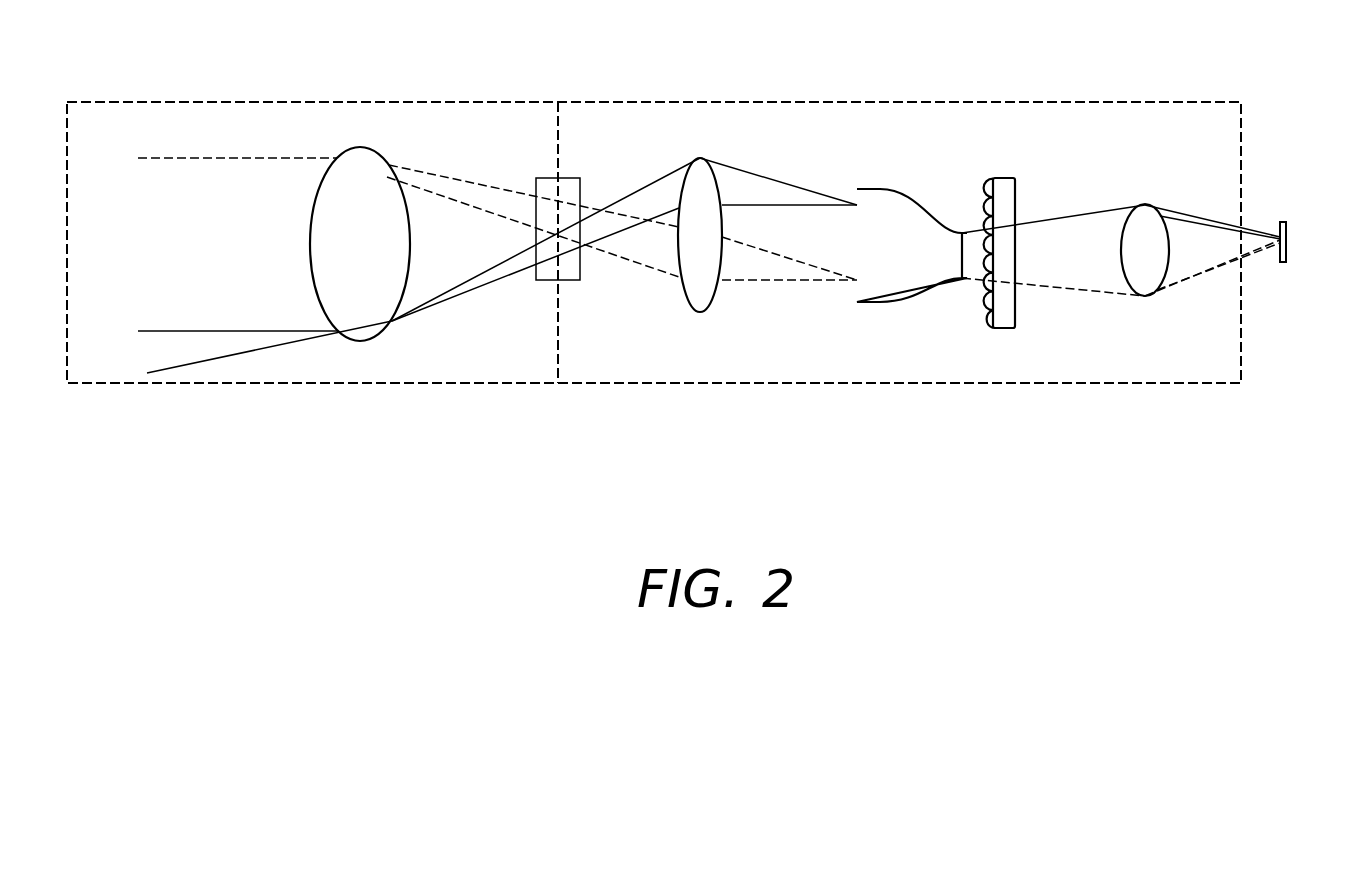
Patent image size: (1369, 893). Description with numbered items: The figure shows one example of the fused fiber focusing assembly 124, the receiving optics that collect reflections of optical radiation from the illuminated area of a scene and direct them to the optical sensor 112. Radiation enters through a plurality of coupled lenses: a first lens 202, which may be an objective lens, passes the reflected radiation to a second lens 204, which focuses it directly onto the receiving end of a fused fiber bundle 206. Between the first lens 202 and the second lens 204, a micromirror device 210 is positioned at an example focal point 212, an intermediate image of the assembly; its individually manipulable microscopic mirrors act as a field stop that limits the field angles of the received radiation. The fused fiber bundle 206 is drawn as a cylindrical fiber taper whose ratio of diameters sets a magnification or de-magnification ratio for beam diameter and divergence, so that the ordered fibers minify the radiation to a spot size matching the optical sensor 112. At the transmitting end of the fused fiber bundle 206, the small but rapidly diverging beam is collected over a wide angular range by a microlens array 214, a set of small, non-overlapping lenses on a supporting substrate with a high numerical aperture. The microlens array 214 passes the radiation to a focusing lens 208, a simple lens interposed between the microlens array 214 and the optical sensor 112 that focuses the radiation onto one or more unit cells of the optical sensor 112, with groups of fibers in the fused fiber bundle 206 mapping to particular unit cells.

The fused fiber focusing assembly 124 is at (848, 102).
The first lens 202 is at (362, 342).
The second lens 204 is at (700, 312).
The fused fiber bundle 206 is at (880, 302).
The focusing lens 208 is at (1145, 296).
The micromirror device 210 is at (567, 178).
The focal point 212 is at (558, 318).
The microlens array 214 is at (1005, 178).
The optical sensor 112 is at (1283, 222).